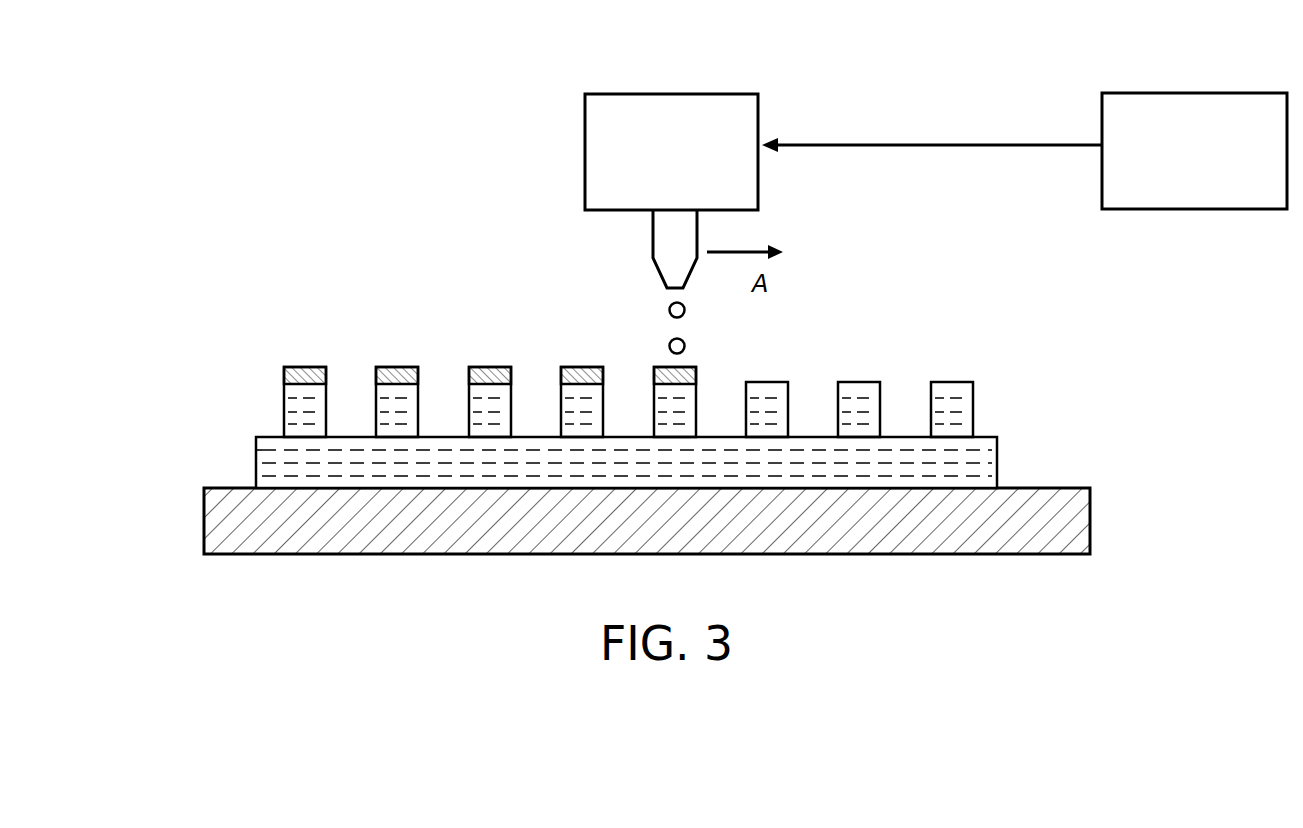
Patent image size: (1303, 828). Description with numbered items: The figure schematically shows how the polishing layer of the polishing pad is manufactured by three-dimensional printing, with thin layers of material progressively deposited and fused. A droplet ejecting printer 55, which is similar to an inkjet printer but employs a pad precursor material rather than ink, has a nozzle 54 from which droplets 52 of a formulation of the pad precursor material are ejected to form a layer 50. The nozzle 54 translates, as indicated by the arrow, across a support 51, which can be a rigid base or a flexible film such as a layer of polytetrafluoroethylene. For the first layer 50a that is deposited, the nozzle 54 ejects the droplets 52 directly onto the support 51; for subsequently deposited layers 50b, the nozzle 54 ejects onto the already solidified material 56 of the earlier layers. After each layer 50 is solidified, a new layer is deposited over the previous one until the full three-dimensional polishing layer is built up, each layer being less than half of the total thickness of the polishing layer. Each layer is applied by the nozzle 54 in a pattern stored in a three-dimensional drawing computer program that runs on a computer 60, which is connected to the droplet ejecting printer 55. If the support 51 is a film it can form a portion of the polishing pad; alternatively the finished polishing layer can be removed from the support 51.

The layer 50 is at (284, 372).
The first layer 50a is at (256, 483).
The subsequently deposited layer 50b is at (256, 470).
The support 51 is at (1090, 530).
The droplets 52 is at (669, 316).
The nozzle 54 is at (653, 240).
The droplet ejecting printer 55 is at (585, 145).
The already solidified material 56 is at (973, 408).
The computer 60 is at (1133, 210).